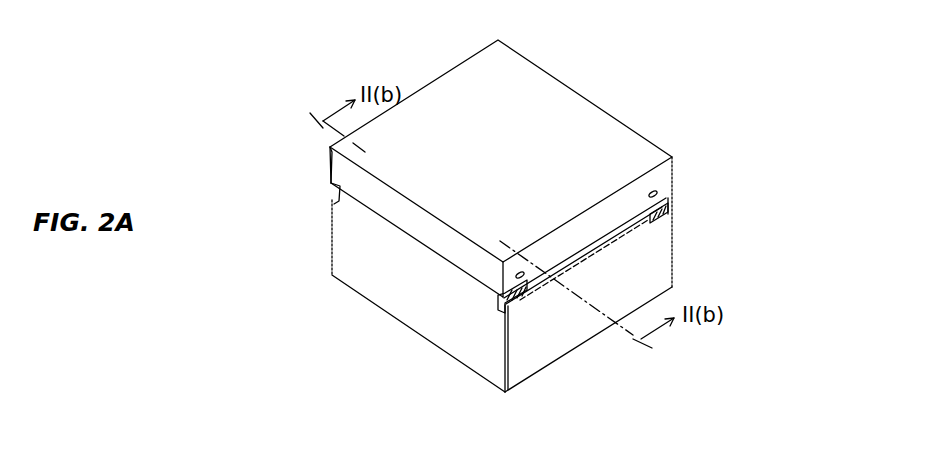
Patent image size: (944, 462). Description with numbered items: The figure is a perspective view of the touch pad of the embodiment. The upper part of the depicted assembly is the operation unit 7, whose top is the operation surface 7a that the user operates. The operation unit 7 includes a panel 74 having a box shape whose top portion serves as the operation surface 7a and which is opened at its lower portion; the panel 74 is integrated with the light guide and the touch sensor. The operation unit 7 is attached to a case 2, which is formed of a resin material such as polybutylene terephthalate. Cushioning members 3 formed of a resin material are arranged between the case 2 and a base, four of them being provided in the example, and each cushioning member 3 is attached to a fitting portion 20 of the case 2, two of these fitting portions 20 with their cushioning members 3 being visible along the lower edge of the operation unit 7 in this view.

The operation unit 7 is at (476, 154).
The operation surface 7a is at (458, 85).
The panel 74 is at (337, 175).
The case 2 is at (517, 372).
The fitting portion 20 is at (660, 220).
The cushioning member 3 is at (660, 207).